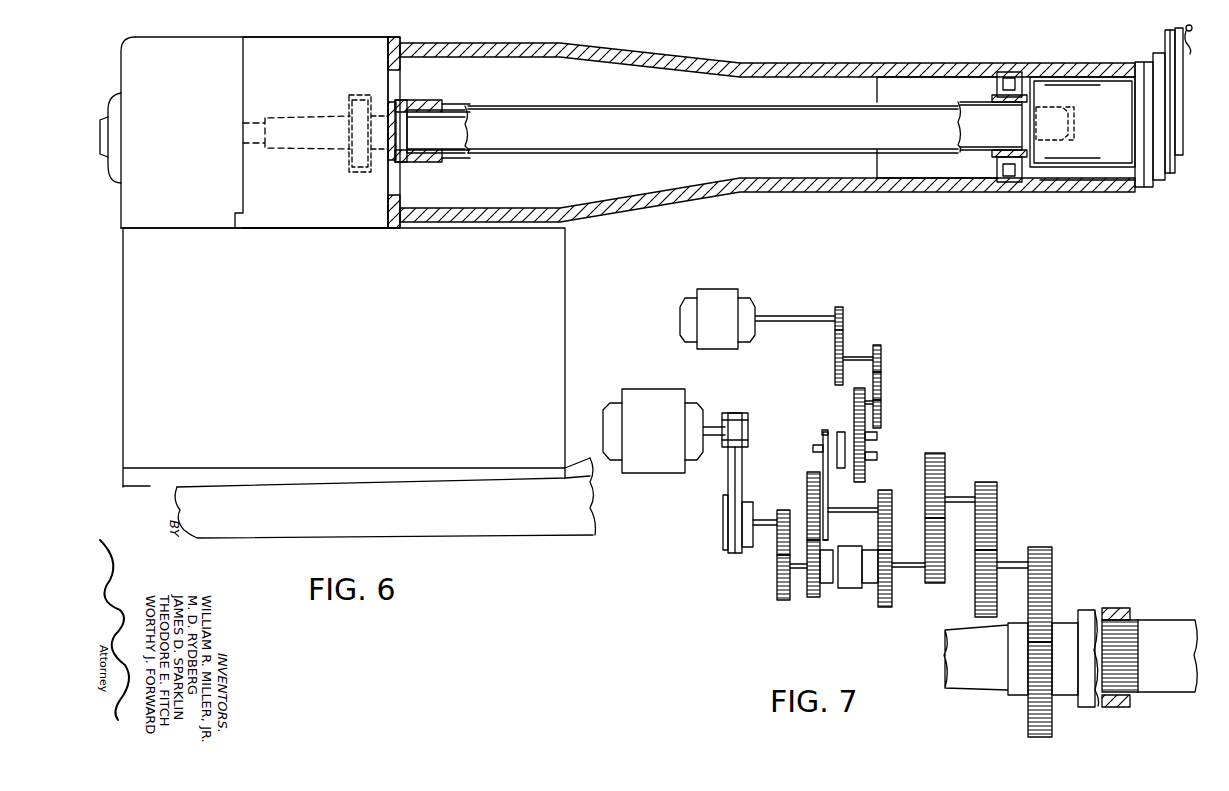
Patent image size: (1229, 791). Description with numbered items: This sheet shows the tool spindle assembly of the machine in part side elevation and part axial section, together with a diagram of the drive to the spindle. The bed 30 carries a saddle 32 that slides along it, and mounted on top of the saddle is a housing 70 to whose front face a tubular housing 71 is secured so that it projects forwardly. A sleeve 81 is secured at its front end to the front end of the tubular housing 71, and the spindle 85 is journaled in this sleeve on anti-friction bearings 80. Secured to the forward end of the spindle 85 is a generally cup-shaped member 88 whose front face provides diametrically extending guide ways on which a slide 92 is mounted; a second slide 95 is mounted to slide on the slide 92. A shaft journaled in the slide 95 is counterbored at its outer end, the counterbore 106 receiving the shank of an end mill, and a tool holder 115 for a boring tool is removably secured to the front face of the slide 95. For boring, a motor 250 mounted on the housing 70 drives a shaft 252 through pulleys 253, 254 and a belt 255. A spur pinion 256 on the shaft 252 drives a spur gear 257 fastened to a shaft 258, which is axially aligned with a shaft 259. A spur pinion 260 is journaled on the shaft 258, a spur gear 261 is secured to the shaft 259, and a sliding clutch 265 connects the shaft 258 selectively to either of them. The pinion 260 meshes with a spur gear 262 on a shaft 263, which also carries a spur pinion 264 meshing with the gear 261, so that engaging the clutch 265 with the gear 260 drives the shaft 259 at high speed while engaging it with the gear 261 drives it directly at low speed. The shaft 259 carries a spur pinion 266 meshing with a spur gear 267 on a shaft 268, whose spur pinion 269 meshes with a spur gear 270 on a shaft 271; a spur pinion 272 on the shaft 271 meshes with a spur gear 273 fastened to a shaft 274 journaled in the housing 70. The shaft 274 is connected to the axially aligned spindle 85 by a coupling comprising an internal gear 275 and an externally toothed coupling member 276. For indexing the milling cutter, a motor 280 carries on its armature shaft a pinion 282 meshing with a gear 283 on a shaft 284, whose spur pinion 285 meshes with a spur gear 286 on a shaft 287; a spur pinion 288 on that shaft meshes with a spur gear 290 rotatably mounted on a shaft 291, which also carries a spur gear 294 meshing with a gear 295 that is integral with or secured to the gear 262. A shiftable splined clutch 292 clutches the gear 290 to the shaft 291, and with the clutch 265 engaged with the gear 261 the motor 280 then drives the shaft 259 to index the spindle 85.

In FIG. 6, the bed 30 is at (437, 533).
In FIG. 6, the saddle 32 is at (565, 365).
In FIG. 6, the housing 70 is at (327, 43).
In FIG. 6, the tubular housing 71 is at (752, 63).
In FIG. 6, the anti-friction bearings 80 is at (992, 158).
In FIG. 6, the sleeve 81 is at (1073, 182).
In FIG. 6, the spindle 85 is at (829, 152).
In FIG. 7, the spindle 85 is at (1175, 695).
In FIG. 6, the cup-shaped member 88 is at (1092, 78).
In FIG. 6, the slide 92 is at (1148, 55).
In FIG. 6, the slide 95 is at (1184, 88).
In FIG. 6, the counterbore 106 is at (1172, 28).
In FIG. 6, the tool holder 115 is at (1193, 36).
In FIG. 6, the motor 250 is at (116, 96).
In FIG. 7, the motor 250 is at (678, 390).
In FIG. 7, the shaft 252 is at (758, 548).
In FIG. 7, the pulley 253 is at (744, 413).
In FIG. 7, the pulley 254 is at (722, 545).
In FIG. 7, the belt 255 is at (722, 490).
In FIG. 7, the spur pinion 256 is at (785, 503).
In FIG. 7, the spur gear 257 is at (770, 597).
In FIG. 7, the shaft 258 is at (798, 570).
In FIG. 7, the shaft 259 is at (905, 572).
In FIG. 7, the spur pinion 260 is at (815, 600).
In FIG. 7, the spur gear 261 is at (886, 607).
In FIG. 7, the spur gear 262 is at (808, 475).
In FIG. 7, the shaft 263 is at (853, 508).
In FIG. 7, the spur pinion 264 is at (886, 490).
In FIG. 7, the sliding clutch 265 is at (848, 590).
In FIG. 7, the spur pinion 266 is at (938, 583).
In FIG. 7, the spur gear 267 is at (938, 453).
In FIG. 7, the shaft 268 is at (960, 495).
In FIG. 7, the spur pinion 269 is at (998, 495).
In FIG. 7, the spur gear 270 is at (970, 560).
In FIG. 7, the shaft 271 is at (1010, 560).
In FIG. 7, the spur pinion 272 is at (1045, 555).
In FIG. 6, the spur gear 273 is at (356, 176).
In FIG. 7, the spur gear 273 is at (1050, 600).
In FIG. 6, the shaft 274 is at (315, 142).
In FIG. 7, the shaft 274 is at (983, 692).
In FIG. 6, the internal gear 275 is at (438, 100).
In FIG. 7, the internal gear 275 is at (1128, 610).
In FIG. 6, the externally toothed coupling member 276 is at (452, 162).
In FIG. 7, the externally toothed coupling member 276 is at (1138, 628).
In FIG. 7, the motor 280 is at (727, 290).
In FIG. 7, the pinion 282 is at (839, 307).
In FIG. 7, the gear 283 is at (846, 330).
In FIG. 7, the shaft 284 is at (857, 353).
In FIG. 7, the spur pinion 285 is at (882, 350).
In FIG. 7, the spur gear 286 is at (882, 378).
In FIG. 7, the shaft 287 is at (882, 394).
In FIG. 7, the spur pinion 288 is at (852, 393).
In FIG. 7, the spur gear 290 is at (872, 436).
In FIG. 7, the shaft 291 is at (812, 448).
In FIG. 7, the shiftable splined clutch 292 is at (842, 432).
In FIG. 7, the spur gear 294 is at (822, 434).
In FIG. 7, the gear 295 is at (829, 528).